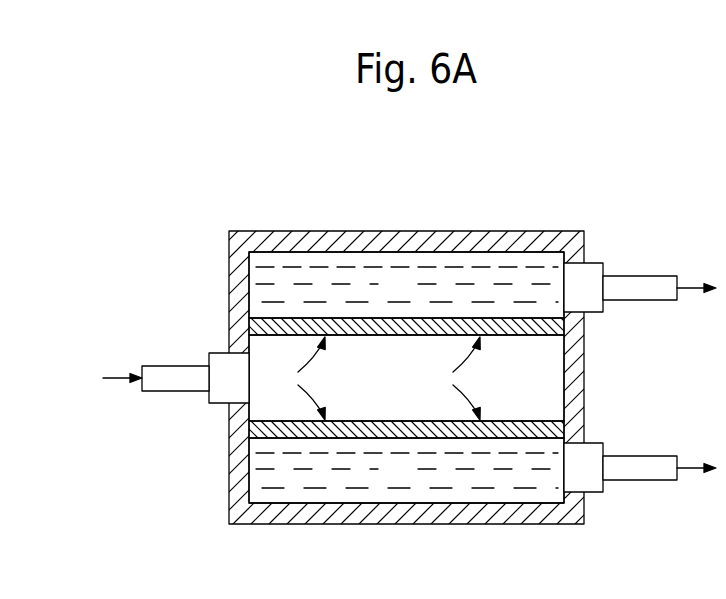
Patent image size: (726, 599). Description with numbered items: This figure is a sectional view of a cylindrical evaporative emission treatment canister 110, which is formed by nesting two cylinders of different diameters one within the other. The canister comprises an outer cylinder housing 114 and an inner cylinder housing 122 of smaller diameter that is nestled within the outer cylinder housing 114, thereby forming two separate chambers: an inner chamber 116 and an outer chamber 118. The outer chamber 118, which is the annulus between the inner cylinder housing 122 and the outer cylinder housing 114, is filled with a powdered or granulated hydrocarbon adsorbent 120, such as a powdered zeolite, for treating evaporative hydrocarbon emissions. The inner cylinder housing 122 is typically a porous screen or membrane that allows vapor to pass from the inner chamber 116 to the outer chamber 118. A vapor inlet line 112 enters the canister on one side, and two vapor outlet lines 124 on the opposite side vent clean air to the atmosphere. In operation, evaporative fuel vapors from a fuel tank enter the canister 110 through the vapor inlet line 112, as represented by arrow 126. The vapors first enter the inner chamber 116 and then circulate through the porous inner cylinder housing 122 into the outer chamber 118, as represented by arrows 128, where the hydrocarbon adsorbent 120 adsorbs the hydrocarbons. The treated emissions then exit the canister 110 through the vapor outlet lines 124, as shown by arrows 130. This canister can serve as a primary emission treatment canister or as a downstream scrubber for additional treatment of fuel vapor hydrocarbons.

The cylindrical evaporative emission treatment canister 110 is at (529, 178).
The vapor inlet line 112 is at (185, 375).
The outer cylinder housing 114 is at (463, 231).
The inner chamber 116 is at (270, 407).
The outer chamber 118 is at (303, 282).
The hydrocarbon adsorbent 120 is at (413, 296).
The inner cylinder housing 122 is at (518, 330).
The vapor outlet lines 124 is at (640, 283).
The arrow 126 is at (117, 379).
The arrows 128 is at (314, 367).
The arrows 130 is at (688, 289).